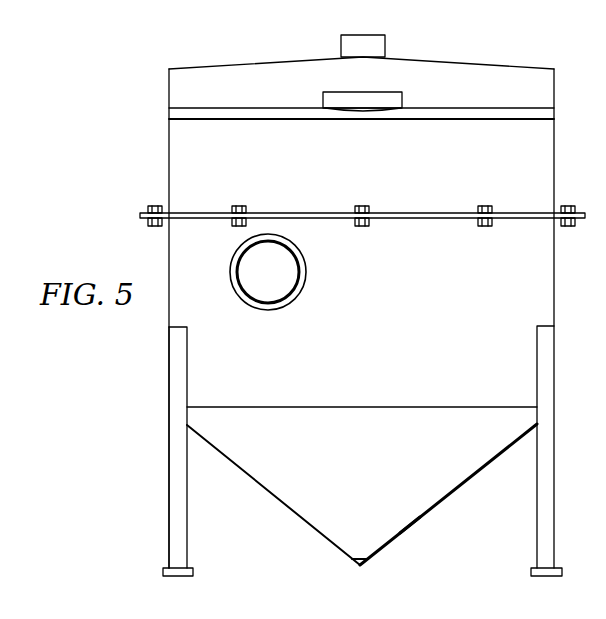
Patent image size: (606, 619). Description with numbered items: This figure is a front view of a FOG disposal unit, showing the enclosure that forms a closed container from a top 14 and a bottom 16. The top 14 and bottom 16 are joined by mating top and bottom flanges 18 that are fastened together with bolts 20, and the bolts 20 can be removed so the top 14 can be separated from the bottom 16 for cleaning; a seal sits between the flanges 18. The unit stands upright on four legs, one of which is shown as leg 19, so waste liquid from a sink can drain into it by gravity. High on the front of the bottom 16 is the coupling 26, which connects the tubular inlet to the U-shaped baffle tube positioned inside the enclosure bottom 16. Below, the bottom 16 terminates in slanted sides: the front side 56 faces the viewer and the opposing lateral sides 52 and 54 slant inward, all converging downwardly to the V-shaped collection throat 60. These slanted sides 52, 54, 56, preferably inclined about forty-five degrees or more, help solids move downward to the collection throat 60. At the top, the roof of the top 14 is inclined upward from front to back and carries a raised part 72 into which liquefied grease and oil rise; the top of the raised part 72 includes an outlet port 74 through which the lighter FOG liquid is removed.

The top 14 is at (169, 140).
The bottom 16 is at (169, 383).
The flanges 18 is at (141, 212).
The leg 19 is at (168, 488).
The bolts 20 is at (155, 205).
The coupling 26 is at (300, 270).
The slanted lateral side 52 is at (453, 496).
The slanted lateral side 54 is at (272, 494).
The slanted front side 56 is at (412, 508).
The V-shaped collection throat 60 is at (355, 568).
The raised part 72 is at (487, 62).
The outlet port 74 is at (340, 47).